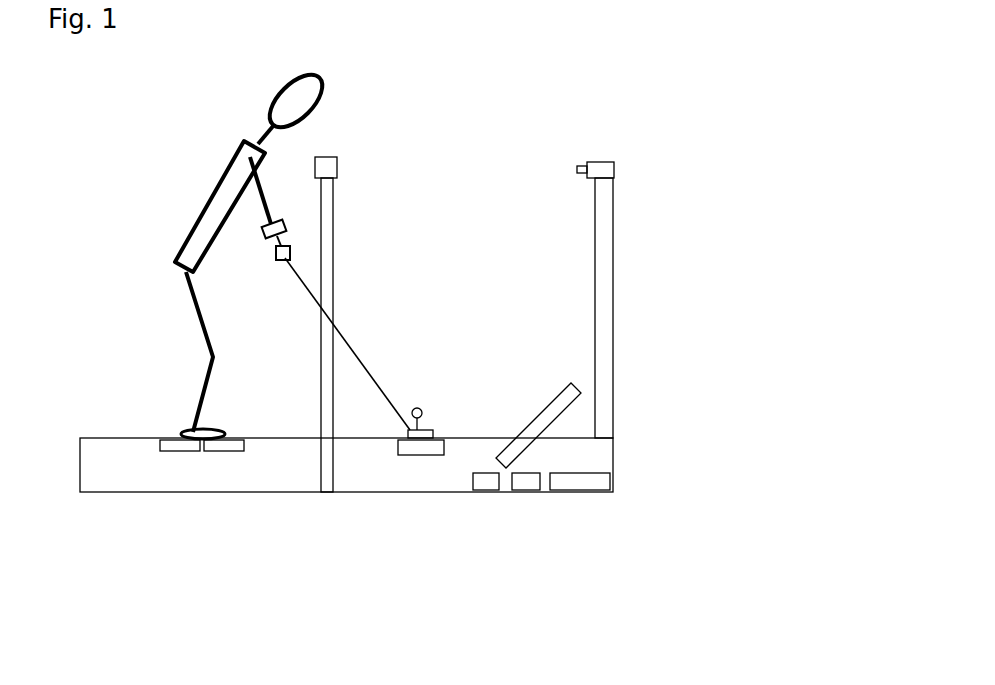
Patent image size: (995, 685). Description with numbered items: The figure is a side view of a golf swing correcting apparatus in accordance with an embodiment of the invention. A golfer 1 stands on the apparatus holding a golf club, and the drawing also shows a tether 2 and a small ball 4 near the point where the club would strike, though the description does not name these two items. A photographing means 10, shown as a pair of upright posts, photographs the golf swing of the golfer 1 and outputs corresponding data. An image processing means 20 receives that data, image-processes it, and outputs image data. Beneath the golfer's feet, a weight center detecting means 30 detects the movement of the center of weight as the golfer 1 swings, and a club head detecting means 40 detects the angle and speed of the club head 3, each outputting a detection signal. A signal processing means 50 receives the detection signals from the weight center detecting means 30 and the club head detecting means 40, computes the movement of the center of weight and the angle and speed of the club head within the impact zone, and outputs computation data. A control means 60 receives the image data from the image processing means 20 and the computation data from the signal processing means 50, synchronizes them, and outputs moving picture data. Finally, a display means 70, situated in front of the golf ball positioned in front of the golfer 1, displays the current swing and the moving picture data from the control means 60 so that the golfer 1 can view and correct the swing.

The golfer 1 is at (191, 218).
The cord / tether 2 is at (360, 339).
The club head 3 is at (449, 432).
The ball / sensor on attachment 4 is at (428, 400).
The photographing means 10 is at (351, 164).
The image processing means 20 is at (477, 500).
The weight center detecting means 30 is at (172, 463).
The club head detecting means 40 is at (406, 464).
The signal processing means 50 is at (521, 505).
The control means 60 is at (594, 500).
The display means 70 is at (534, 389).